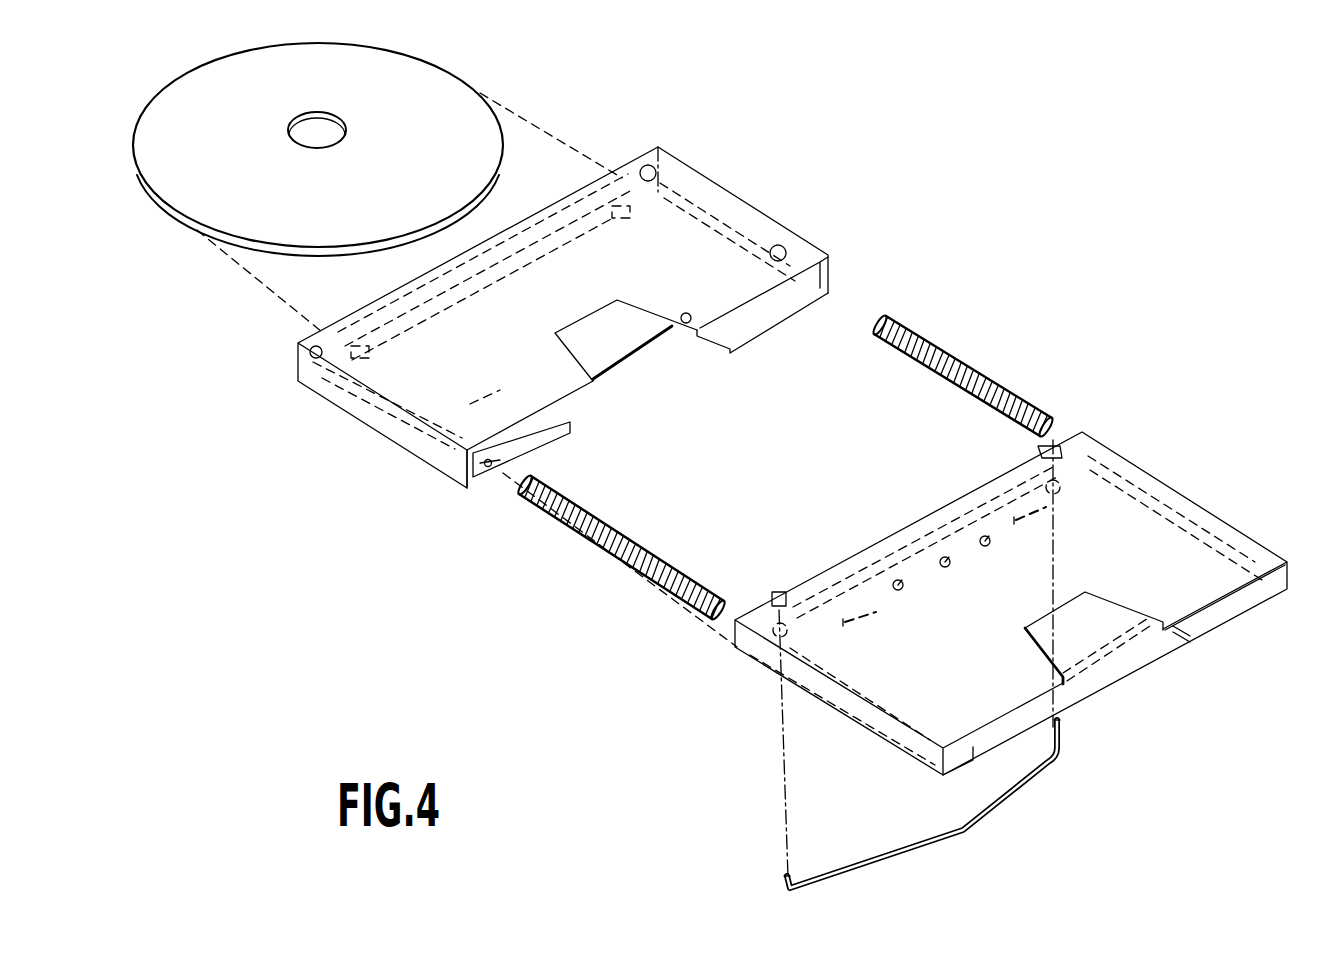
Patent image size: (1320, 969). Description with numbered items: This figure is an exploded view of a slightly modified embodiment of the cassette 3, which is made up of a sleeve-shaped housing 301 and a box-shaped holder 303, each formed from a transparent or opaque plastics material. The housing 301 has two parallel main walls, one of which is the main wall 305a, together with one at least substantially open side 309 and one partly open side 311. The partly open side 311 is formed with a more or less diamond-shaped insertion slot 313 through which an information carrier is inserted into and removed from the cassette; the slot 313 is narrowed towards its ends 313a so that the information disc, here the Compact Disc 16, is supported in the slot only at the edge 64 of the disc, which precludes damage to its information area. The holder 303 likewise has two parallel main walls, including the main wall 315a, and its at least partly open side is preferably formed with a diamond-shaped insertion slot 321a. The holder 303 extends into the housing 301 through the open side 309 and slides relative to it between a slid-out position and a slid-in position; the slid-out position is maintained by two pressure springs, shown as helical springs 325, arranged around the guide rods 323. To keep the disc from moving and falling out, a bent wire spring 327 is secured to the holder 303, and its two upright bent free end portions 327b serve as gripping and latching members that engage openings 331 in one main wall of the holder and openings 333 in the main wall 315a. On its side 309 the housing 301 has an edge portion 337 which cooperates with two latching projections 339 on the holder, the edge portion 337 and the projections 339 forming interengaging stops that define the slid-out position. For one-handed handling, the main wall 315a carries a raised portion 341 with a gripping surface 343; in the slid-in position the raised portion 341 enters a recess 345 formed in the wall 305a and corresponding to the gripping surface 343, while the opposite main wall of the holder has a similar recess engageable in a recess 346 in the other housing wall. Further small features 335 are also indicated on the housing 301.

The cassette 3 is at (332, 453).
The Compact Disc 16 is at (473, 130).
The edge of the disc 64 is at (322, 250).
The sleeve-shaped housing 301 is at (817, 255).
The box-shaped holder 303 is at (1113, 448).
The main wall of the housing 305a is at (787, 243).
The substantially open side of the housing 309 is at (507, 449).
The partly open side of the housing 311 is at (320, 340).
The insertion slot 313 is at (508, 262).
The ends of the insertion slot 313a is at (624, 180).
The main wall of the holder 315a is at (1197, 580).
The insertion slot of the holder 321a is at (910, 540).
The guide rods 323 is at (723, 213).
The coil spring 325 is at (918, 332).
The bent wire spring 327 is at (1022, 778).
The upright bent free end portions 327b is at (1061, 733).
The openings in the main wall 331 is at (1062, 487).
The openings in the main wall 333 is at (1040, 455).
The pin 335 is at (627, 218).
The edge portion 337 is at (493, 480).
The latching projections 339 is at (1034, 522).
The raised portion 341 is at (1025, 630).
The gripping surface 343 is at (1097, 625).
The recess 345 is at (610, 330).
The recess 346 is at (577, 412).